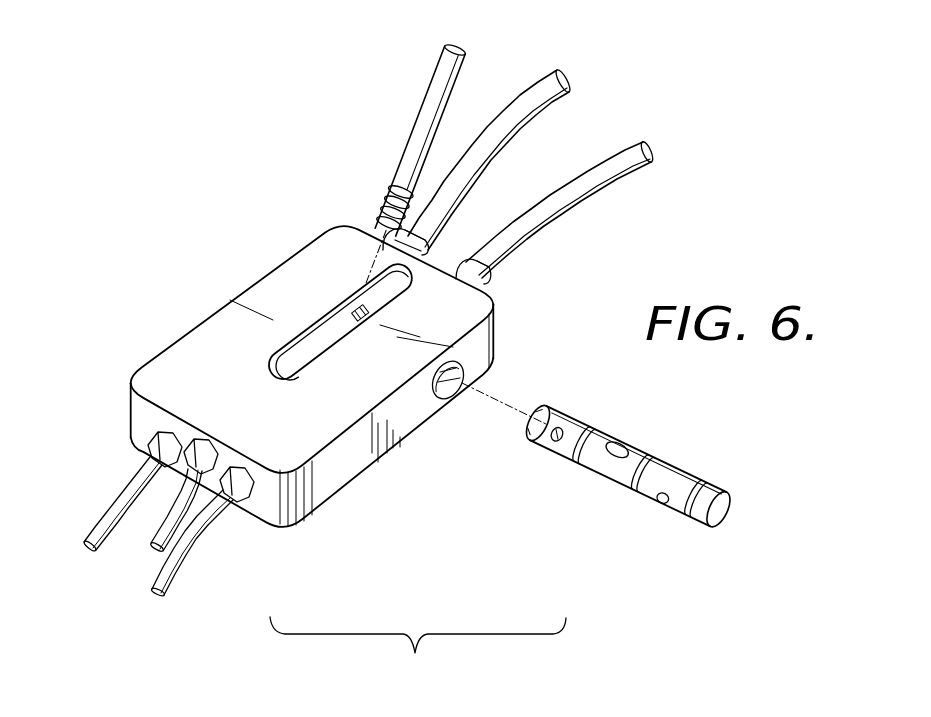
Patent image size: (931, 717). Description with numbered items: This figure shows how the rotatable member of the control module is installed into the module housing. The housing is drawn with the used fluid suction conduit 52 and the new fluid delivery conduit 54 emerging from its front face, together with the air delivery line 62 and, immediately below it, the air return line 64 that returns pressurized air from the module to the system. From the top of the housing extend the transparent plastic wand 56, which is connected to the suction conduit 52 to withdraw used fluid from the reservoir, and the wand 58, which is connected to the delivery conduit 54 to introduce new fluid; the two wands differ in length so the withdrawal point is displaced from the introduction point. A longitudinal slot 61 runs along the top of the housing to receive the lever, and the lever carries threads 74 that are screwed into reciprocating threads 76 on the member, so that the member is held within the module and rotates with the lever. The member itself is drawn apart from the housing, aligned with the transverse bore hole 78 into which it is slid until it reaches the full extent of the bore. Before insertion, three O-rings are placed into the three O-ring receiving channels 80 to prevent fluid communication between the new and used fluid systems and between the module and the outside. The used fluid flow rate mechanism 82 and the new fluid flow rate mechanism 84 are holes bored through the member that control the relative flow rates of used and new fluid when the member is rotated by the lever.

The used fluid suction conduit 52 is at (92, 546).
The new fluid delivery conduit 54 is at (173, 589).
The transparent plastic wand 56 is at (606, 198).
The wand 58 is at (519, 93).
The longitudinal slot 61 is at (323, 356).
The air delivery line 62 is at (158, 492).
The air return line 64 is at (156, 550).
The threads 74 is at (382, 228).
The reciprocating threads 76 is at (629, 446).
The bore hole 78 is at (470, 383).
The O-ring receiving channels 80 is at (583, 434).
The used fluid flow rate mechanism 82 is at (550, 443).
The new fluid flow rate mechanism 84 is at (663, 507).